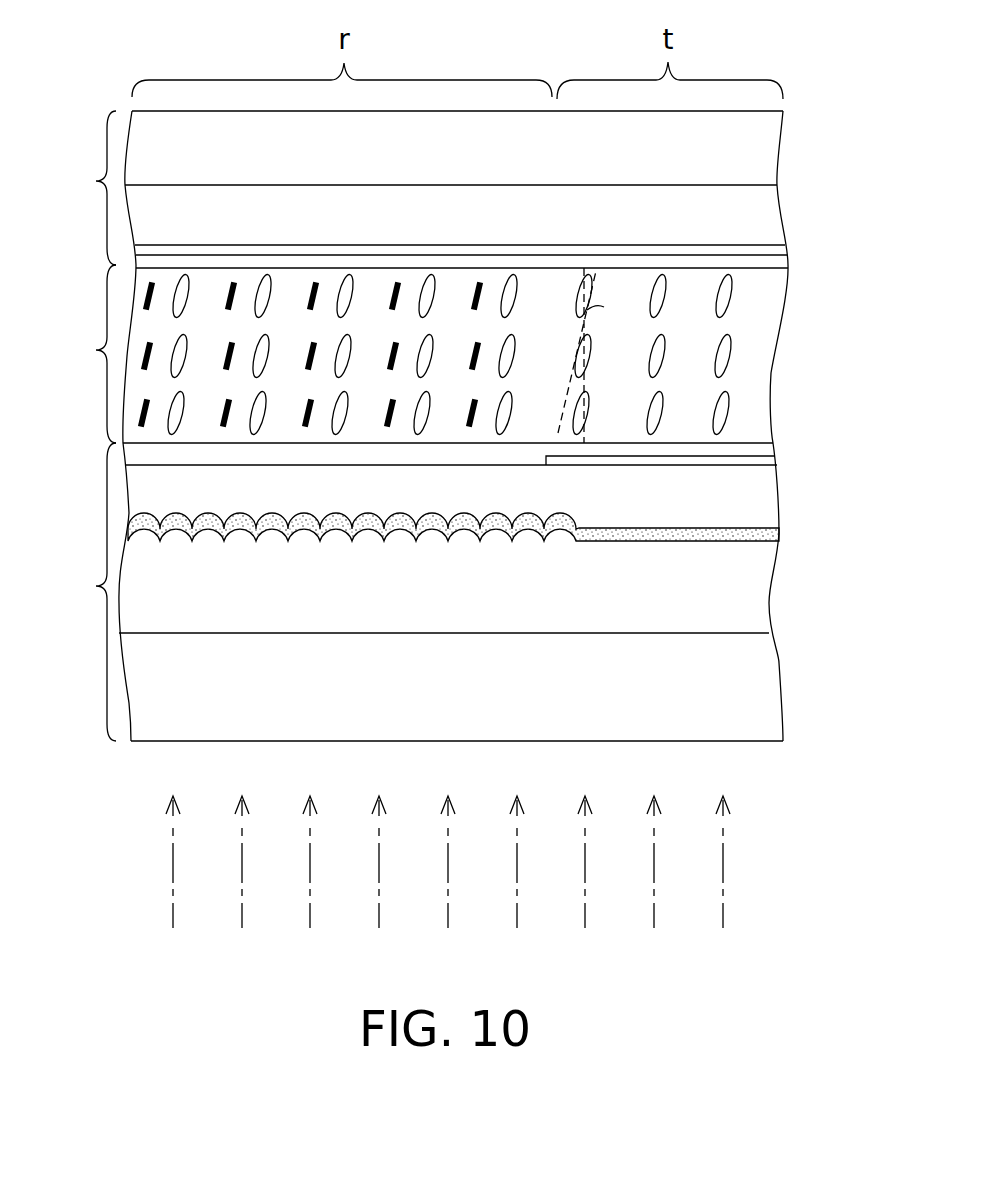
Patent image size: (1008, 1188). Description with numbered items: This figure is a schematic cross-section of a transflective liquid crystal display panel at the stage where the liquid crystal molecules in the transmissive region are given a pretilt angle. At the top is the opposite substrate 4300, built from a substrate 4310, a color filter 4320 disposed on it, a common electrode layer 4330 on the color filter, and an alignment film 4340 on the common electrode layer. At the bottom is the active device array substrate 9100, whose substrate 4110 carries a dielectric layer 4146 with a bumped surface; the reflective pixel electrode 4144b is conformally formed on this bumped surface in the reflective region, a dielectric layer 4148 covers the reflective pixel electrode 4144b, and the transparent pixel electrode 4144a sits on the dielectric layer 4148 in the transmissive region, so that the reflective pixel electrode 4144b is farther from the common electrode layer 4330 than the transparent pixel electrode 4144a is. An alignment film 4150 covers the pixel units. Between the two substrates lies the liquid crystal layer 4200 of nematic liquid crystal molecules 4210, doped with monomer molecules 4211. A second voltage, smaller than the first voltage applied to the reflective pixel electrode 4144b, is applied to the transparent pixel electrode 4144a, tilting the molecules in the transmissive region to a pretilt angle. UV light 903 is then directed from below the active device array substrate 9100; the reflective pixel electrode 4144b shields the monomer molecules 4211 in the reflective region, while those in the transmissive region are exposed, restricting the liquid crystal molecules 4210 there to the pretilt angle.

The opposite substrate 4300 is at (71, 188).
The liquid crystal layer 4200 is at (71, 354).
The active device array substrate 9100 is at (71, 592).
The substrate 4310 is at (750, 150).
The color filter 4320 is at (750, 215).
The common electrode layer 4330 is at (755, 246).
The alignment film 4340 is at (755, 262).
The monomer molecules 4211 is at (478, 303).
The liquid crystal molecules 4210 is at (722, 355).
The alignment film 4150 is at (765, 445).
The transparent pixel electrode 4144a is at (760, 460).
The dielectric layer 4148 is at (747, 508).
The reflective pixel electrode 4144b is at (580, 523).
The dielectric layer 4146 is at (742, 593).
The substrate 4110 is at (742, 695).
The UV light 903 is at (723, 850).